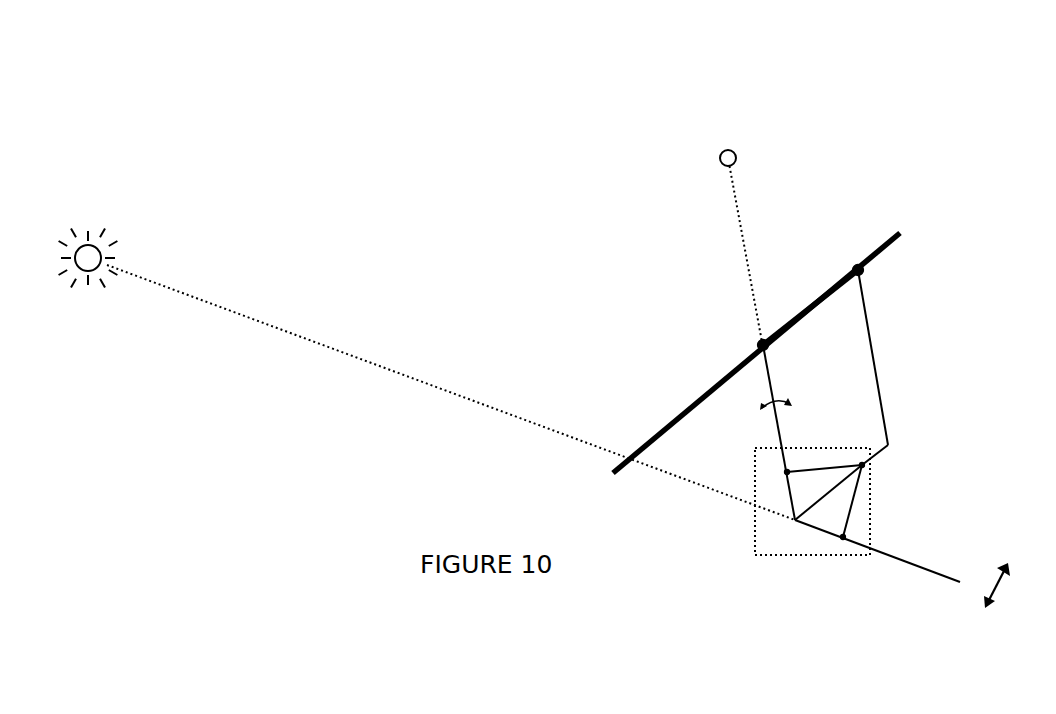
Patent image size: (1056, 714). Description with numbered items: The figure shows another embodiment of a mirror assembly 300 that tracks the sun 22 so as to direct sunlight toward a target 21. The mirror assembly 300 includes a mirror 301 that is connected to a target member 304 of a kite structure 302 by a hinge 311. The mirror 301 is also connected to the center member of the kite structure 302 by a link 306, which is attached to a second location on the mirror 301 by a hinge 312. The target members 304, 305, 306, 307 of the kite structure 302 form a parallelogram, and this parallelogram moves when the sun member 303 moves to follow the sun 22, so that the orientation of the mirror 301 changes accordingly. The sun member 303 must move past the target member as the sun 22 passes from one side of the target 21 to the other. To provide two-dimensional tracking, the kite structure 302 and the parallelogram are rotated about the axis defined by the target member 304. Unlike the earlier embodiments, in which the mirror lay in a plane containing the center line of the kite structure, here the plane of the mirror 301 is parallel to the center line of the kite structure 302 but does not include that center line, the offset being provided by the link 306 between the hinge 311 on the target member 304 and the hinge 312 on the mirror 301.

The mirror assembly 300 is at (982, 106).
The sun 22 is at (83, 247).
The target 21 is at (728, 151).
The mirror 301 is at (702, 392).
The target member 305 is at (813, 300).
The hinge 311 is at (762, 342).
The hinge 312 is at (858, 266).
The target member 304 is at (770, 373).
The link 306 is at (873, 348).
The target member 307 is at (880, 450).
The kite structure 302 is at (757, 533).
The sun member 303 is at (907, 562).